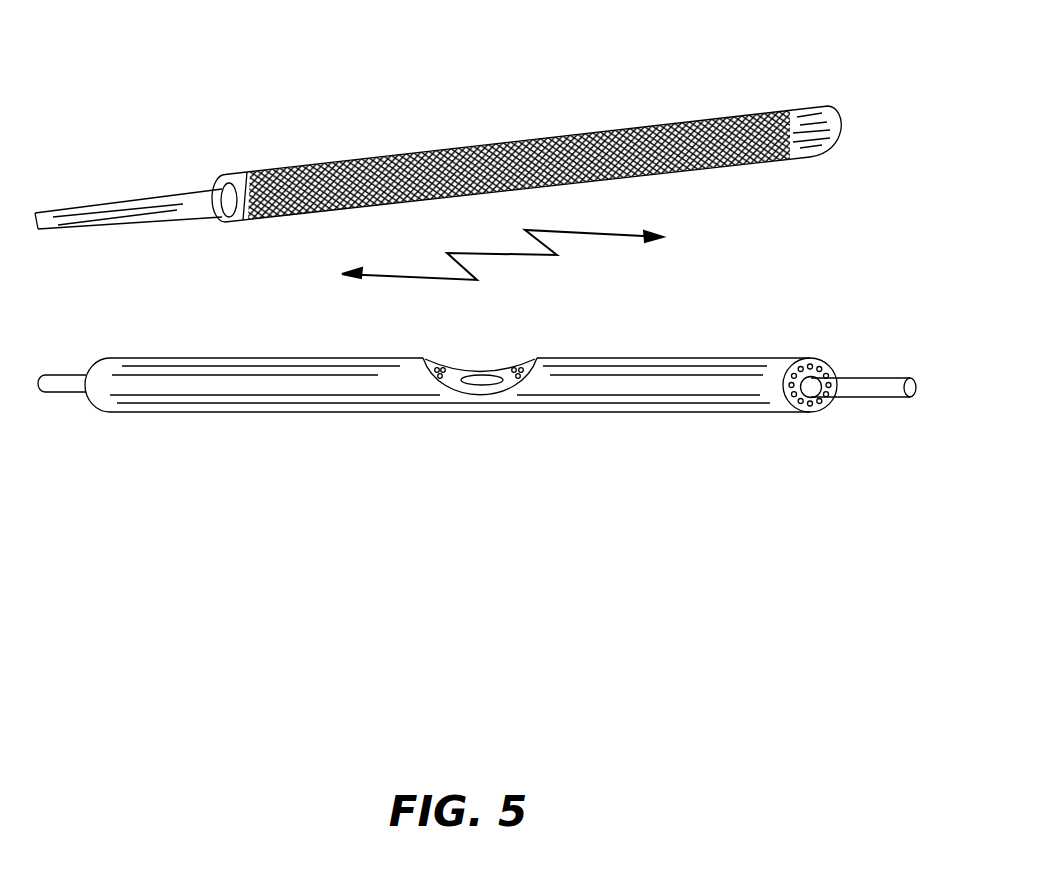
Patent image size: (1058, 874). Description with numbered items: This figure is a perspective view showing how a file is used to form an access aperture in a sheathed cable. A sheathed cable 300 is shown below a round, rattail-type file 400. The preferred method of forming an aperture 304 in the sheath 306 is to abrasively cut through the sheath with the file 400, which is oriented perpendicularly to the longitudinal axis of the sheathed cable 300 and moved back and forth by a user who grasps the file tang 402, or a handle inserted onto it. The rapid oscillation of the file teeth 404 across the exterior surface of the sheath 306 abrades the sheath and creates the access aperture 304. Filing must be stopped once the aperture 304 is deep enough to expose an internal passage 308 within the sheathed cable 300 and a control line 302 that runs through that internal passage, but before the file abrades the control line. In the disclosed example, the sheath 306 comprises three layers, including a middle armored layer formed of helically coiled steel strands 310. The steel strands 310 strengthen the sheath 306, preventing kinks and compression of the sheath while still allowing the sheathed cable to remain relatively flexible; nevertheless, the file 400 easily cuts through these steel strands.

The sheathed cable 300 is at (175, 430).
The control line 302 is at (62, 375).
The access aperture 304 is at (486, 376).
The sheath 306 is at (262, 412).
The internal passage 308 is at (813, 368).
The helically coiled steel strands 310 is at (812, 413).
The round (rattail) file 400 is at (463, 110).
The file tang 402 is at (142, 197).
The file teeth 404 is at (547, 135).